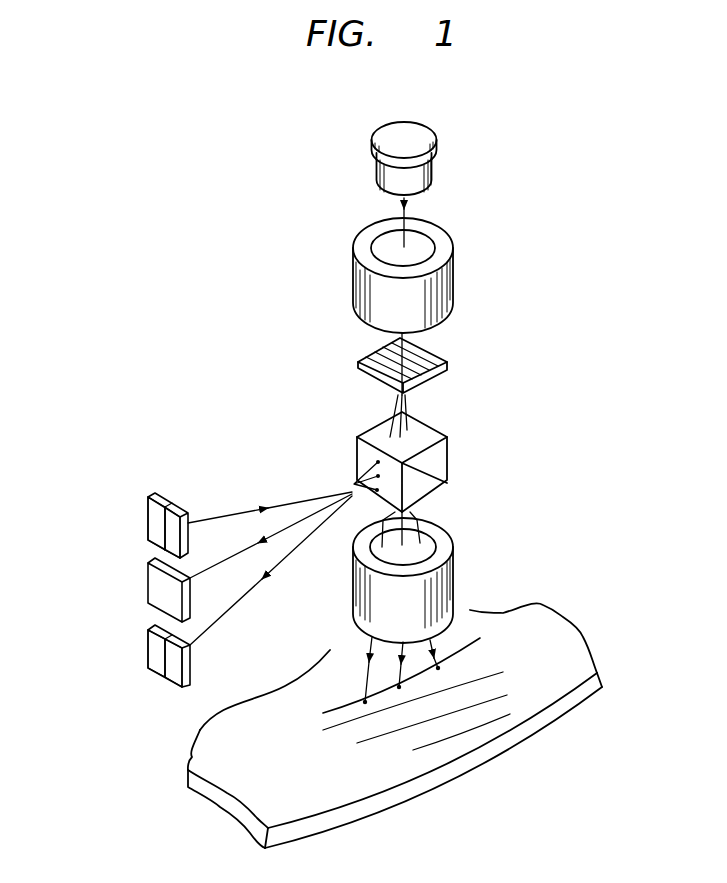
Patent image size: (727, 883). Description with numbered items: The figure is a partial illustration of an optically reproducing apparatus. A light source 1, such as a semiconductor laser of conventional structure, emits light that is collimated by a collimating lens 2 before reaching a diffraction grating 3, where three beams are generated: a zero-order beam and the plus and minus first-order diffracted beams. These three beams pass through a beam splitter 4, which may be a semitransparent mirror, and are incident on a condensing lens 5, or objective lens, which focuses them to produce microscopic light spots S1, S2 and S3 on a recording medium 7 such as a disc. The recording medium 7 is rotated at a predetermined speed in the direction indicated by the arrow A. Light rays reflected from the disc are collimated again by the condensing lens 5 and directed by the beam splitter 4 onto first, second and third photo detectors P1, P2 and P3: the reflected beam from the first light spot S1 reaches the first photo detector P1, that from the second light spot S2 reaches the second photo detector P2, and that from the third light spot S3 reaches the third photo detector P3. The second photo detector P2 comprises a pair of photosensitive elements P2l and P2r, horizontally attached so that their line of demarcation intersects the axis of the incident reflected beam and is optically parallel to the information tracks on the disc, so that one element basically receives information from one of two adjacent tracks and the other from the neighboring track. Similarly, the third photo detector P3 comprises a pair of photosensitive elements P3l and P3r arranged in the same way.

The light source 1 is at (437, 164).
The collimating lens 2 is at (453, 282).
The diffraction grating 3 is at (437, 354).
The beam splitter 4 is at (440, 455).
The condensing lens 5 is at (452, 567).
The recording medium 7 is at (557, 638).
The first light spot S1 is at (399, 687).
The second light spot S2 is at (441, 668).
The third light spot S3 is at (363, 702).
The arrow A is at (558, 770).
The first photo detector P1 is at (153, 592).
The second photo detector P2 is at (217, 468).
The photosensitive element P2l is at (158, 497).
The photosensitive element P2r is at (182, 508).
The third photo detector P3 is at (198, 613).
The photosensitive element P3l is at (153, 658).
The photosensitive element P3r is at (175, 673).